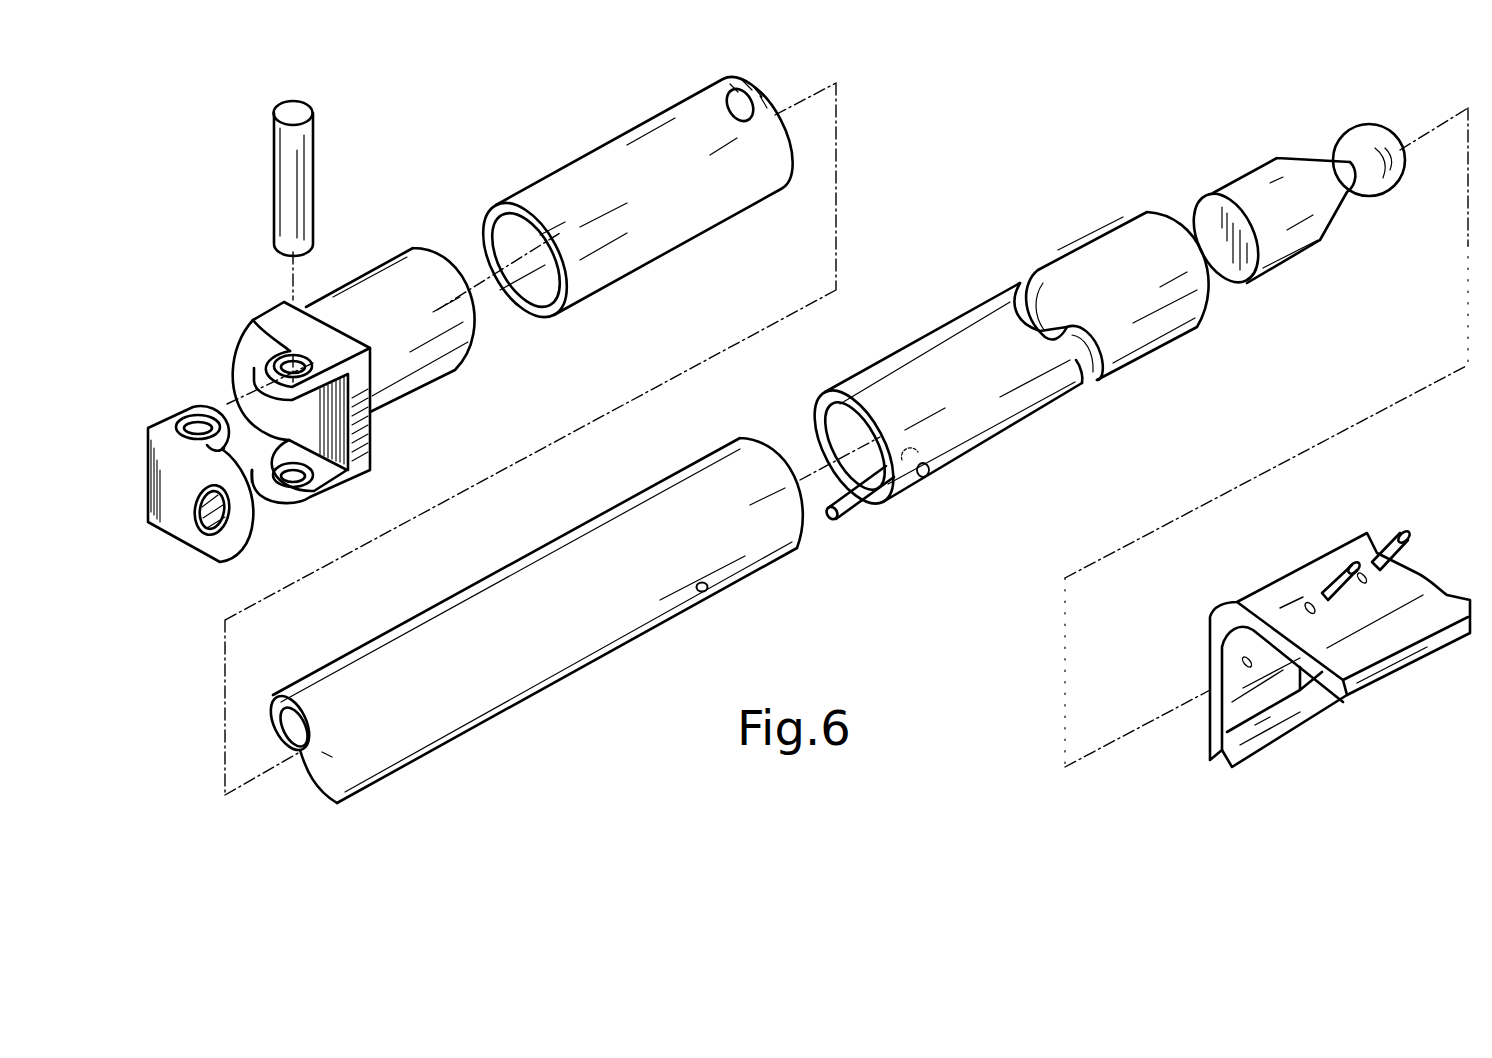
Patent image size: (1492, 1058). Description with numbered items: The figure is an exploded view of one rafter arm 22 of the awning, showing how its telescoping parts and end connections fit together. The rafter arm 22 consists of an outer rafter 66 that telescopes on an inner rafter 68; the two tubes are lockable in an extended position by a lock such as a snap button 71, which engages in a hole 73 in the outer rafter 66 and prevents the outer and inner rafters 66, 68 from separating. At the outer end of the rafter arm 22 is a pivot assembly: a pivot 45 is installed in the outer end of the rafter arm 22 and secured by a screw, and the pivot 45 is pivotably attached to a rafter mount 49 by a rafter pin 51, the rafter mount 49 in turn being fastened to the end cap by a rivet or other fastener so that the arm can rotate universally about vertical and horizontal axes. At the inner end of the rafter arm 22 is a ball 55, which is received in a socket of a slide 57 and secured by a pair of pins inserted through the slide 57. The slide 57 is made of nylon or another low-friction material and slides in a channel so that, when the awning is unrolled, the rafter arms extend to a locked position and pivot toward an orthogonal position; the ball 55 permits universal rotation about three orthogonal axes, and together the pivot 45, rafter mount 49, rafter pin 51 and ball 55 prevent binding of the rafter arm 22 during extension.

The rafter arm 22 is at (936, 206).
The pivot 45 is at (260, 333).
The rafter mount 49 is at (160, 425).
The rafter pin 51 is at (302, 152).
The ball 55 is at (1352, 140).
The slide 57 is at (1292, 582).
The outer rafter 66 is at (725, 572).
The inner rafter 68 is at (1098, 258).
The snap button 71 is at (850, 527).
The hole 73 is at (704, 592).